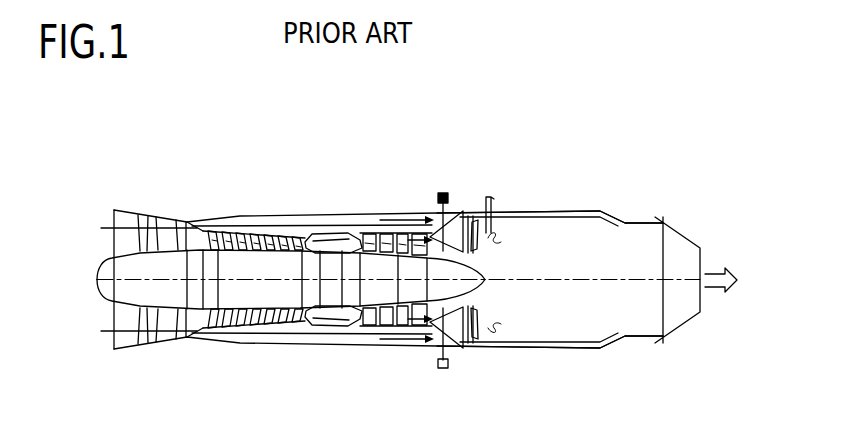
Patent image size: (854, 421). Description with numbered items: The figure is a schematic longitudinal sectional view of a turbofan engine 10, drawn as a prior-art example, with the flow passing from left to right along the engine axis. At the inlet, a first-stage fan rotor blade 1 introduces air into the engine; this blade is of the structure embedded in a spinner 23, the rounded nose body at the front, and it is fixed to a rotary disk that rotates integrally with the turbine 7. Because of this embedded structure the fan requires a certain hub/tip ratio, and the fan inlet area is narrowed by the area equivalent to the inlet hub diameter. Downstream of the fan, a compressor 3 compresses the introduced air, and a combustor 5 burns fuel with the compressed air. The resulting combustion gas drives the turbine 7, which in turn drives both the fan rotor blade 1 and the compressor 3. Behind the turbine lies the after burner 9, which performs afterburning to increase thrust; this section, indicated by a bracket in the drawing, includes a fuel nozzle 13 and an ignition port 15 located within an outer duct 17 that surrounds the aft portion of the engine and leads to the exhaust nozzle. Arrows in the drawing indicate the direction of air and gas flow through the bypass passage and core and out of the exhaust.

The fan rotor blade 1 is at (166, 219).
The compressor 3 is at (249, 233).
The combustor 5 is at (328, 230).
The turbine 7 is at (387, 224).
The after burner 9 is at (541, 234).
The turbofan engine 10 is at (351, 134).
The fuel nozzle 13 is at (442, 192).
The ignition port 15 is at (492, 196).
The outer duct 17 is at (422, 146).
The spinner 23 is at (111, 272).